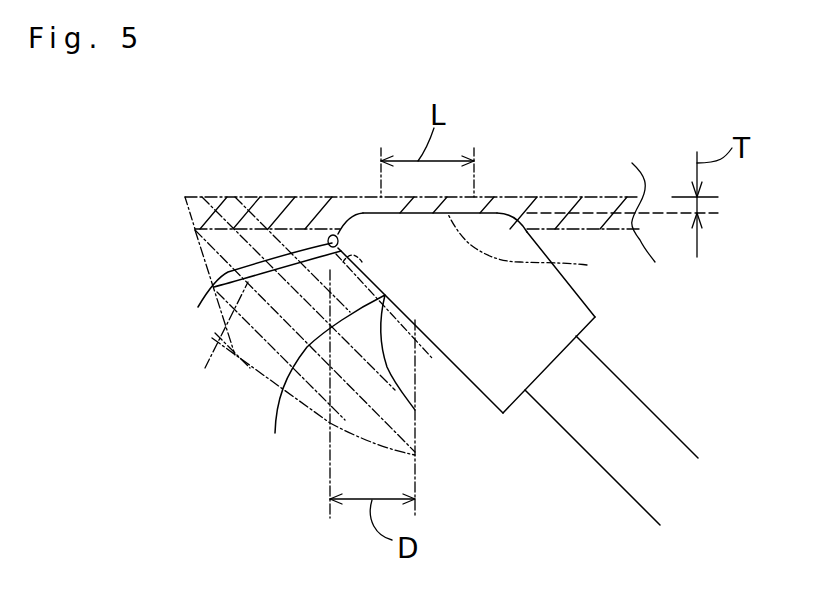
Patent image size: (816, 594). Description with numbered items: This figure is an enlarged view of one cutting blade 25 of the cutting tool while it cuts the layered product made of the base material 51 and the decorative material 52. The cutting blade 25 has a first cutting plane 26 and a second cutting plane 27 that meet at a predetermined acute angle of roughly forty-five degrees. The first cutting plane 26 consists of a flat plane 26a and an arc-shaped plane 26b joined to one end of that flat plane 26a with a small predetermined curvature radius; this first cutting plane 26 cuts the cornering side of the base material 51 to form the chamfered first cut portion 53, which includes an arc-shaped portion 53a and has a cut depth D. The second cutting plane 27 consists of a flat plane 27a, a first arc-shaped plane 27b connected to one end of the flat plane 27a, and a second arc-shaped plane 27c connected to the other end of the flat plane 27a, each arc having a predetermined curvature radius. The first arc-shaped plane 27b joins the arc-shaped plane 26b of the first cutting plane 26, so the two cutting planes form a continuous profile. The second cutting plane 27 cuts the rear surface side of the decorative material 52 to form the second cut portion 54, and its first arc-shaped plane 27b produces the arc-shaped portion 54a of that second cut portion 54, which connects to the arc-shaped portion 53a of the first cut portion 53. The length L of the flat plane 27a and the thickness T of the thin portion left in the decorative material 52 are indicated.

The cutting blade 25 is at (597, 313).
The first cutting plane 26 is at (385, 303).
The flat plane 26a is at (335, 382).
The arc-shaped plane 26b is at (245, 292).
The second cutting plane 27 is at (403, 211).
The flat plane 27a is at (462, 212).
The first arc-shaped plane 27b is at (337, 227).
The second arc-shaped plane 27c is at (505, 207).
The base material 51 is at (210, 339).
The decorative material 52 is at (222, 207).
The first cut portion 53 is at (300, 265).
The arc-shaped portion 53a is at (222, 300).
The second cut portion 54 is at (537, 249).
The arc-shaped portion 54a is at (350, 196).